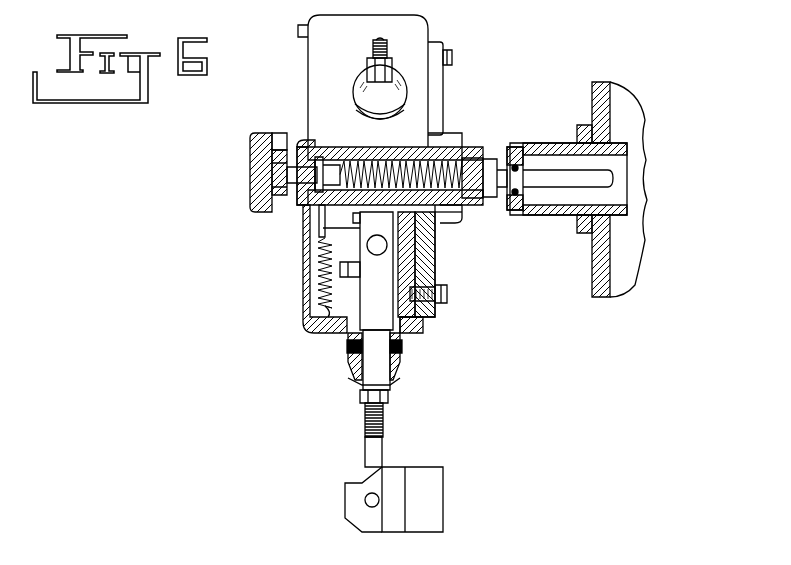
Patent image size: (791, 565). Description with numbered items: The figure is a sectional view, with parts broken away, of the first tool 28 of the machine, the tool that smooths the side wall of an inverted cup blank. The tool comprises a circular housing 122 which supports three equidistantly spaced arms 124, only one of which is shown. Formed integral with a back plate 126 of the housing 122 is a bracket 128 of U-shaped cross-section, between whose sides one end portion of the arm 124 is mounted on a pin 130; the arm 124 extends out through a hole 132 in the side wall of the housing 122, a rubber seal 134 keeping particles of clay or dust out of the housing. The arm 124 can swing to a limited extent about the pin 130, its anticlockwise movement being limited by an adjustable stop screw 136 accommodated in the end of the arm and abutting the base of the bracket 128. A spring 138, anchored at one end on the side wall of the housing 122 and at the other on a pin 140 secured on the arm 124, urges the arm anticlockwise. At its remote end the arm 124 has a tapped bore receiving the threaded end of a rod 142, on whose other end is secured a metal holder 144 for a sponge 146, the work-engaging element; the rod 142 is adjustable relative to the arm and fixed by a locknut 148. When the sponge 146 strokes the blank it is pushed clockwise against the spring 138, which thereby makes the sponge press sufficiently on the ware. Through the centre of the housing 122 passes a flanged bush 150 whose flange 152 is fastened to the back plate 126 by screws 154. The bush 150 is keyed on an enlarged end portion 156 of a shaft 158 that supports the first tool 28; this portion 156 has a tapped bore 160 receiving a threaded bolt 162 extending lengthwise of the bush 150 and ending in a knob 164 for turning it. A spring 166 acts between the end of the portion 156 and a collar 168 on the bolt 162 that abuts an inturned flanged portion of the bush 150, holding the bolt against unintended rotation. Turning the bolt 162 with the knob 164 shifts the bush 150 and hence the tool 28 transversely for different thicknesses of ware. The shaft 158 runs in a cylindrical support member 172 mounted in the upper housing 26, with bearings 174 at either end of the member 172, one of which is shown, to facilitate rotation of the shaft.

The upper housing 26 is at (592, 270).
The first tool 28 is at (259, 315).
The circular housing 122 is at (347, 50).
The arm 124 is at (392, 345).
The back plate 126 is at (436, 262).
The bracket 128 is at (416, 238).
The pin 130 is at (377, 256).
The hole 132 is at (350, 347).
The rubber seal 134 is at (355, 100).
The stop screw 136 is at (348, 278).
The spring 138 is at (318, 275).
The pin 140 is at (322, 228).
The rod 142 is at (386, 42).
The metal holder 144 is at (398, 530).
The sponge 146 is at (436, 497).
The locknut 148 is at (367, 72).
The flanged bush 150 is at (300, 140).
The flange 152 is at (437, 95).
The screws 154 is at (452, 58).
The end portion 156 is at (507, 205).
The shaft 158 is at (550, 183).
The tapped bore 160 is at (478, 198).
The threaded bolt 162 is at (412, 157).
The knob 164 is at (252, 171).
The spring 166 is at (355, 157).
The collar 168 is at (305, 207).
The cylindrical support member 172 is at (577, 128).
The bearings 174 is at (512, 147).